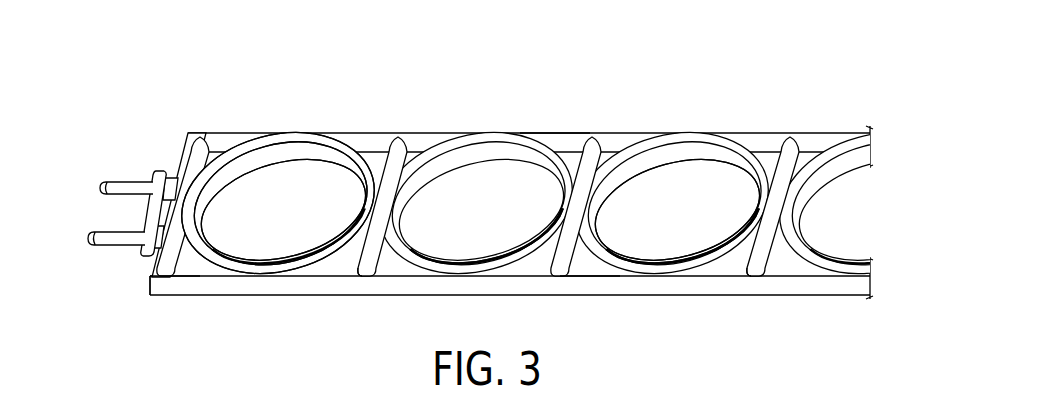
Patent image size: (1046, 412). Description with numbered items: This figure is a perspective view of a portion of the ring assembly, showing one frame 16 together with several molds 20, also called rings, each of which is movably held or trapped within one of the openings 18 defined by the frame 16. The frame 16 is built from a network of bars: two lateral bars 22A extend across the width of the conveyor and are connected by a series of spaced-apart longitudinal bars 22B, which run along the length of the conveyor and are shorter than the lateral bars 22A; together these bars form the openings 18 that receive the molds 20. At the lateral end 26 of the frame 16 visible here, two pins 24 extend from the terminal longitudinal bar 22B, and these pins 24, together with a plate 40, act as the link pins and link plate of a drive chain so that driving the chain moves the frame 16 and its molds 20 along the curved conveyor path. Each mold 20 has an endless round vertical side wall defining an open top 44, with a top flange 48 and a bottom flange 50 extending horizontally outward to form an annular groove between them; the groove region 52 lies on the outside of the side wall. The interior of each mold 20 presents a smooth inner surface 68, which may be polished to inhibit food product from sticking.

The frame 16 is at (712, 58).
The opening 18 is at (372, 147).
The mold 20 is at (235, 152).
The lateral bar 22A is at (552, 138).
The longitudinal bar 22B is at (366, 262).
The pin 24 is at (128, 187).
The lateral end 26 is at (138, 263).
The plate 40 is at (138, 203).
The open top 44 is at (270, 157).
The top flange 48 is at (525, 260).
The bottom flange 50 is at (738, 277).
The ring hole 52 is at (320, 272).
The inner surface 68 is at (302, 148).